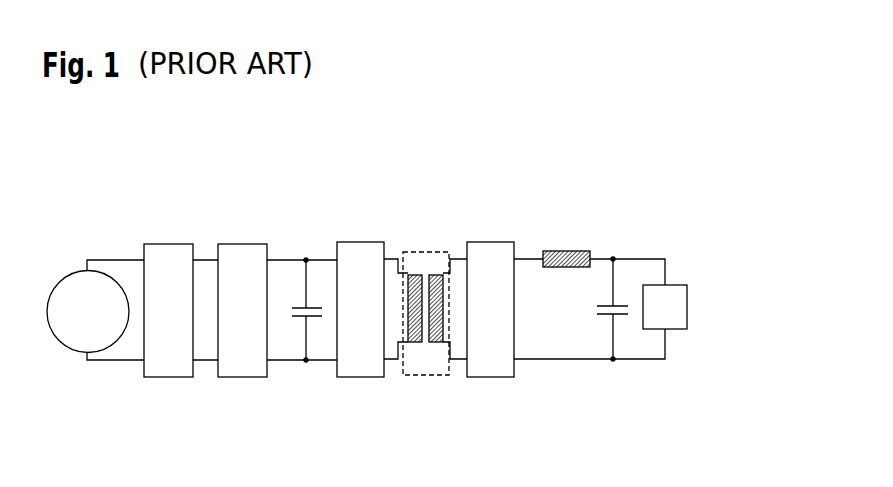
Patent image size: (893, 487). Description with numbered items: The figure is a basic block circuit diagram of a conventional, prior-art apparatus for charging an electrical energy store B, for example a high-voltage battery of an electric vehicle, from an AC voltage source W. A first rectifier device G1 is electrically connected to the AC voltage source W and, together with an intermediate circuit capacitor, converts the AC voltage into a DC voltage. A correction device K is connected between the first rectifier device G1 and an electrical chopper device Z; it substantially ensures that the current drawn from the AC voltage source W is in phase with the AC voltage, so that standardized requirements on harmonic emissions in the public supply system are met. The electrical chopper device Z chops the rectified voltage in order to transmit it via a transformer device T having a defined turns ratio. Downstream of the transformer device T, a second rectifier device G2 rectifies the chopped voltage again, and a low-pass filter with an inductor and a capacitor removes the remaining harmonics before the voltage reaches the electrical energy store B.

The AC voltage source W is at (53, 285).
The first rectifier device G1 is at (164, 244).
The correction device K is at (240, 244).
The electrical chopper device Z is at (358, 242).
The transformer device T is at (429, 377).
The second rectifier device G2 is at (491, 242).
The electrical energy store B is at (673, 284).